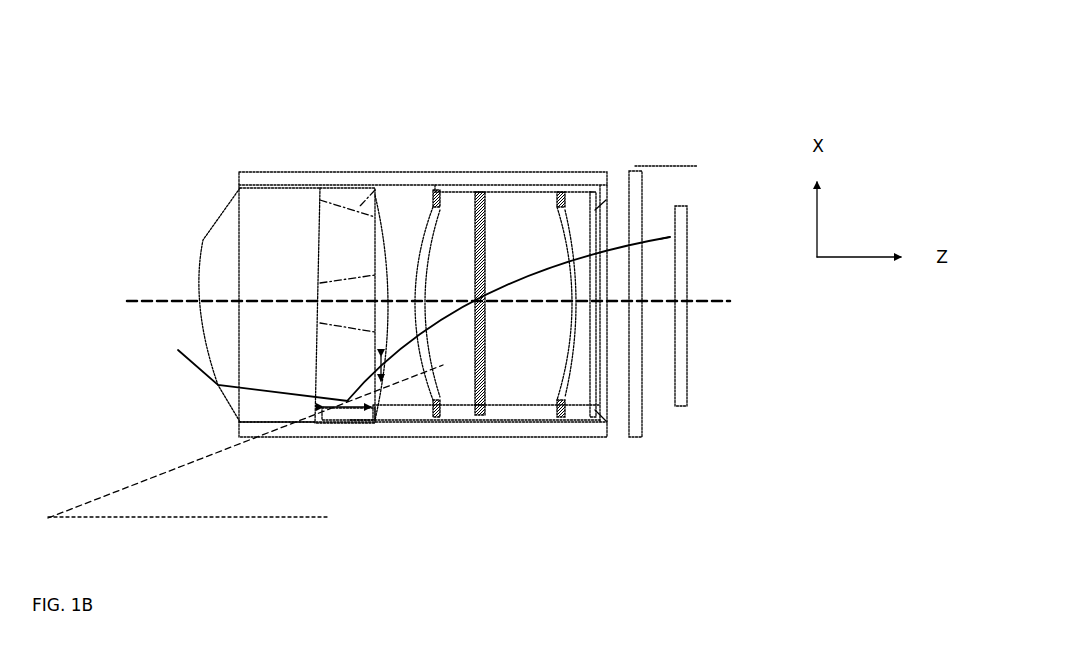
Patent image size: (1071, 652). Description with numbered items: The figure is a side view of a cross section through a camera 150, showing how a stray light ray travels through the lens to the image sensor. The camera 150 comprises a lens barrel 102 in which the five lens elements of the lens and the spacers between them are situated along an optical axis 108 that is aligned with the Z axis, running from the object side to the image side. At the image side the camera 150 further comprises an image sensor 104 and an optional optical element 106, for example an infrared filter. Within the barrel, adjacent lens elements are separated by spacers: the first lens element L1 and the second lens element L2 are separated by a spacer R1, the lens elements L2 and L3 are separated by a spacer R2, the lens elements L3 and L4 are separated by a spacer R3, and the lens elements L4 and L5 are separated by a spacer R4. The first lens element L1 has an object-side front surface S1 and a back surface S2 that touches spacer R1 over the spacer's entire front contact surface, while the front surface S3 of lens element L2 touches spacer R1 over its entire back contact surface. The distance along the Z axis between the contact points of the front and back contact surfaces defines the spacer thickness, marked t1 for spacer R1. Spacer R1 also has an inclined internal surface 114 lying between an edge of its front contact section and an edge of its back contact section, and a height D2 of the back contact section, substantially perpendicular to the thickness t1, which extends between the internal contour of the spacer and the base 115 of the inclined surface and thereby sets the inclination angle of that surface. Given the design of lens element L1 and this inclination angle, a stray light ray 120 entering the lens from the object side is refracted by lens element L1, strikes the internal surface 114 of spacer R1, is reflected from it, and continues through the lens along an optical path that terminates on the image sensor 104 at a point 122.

The camera 150 is at (498, 66).
The lens barrel 102 is at (537, 195).
The image sensor 104 is at (688, 233).
The optical element 106 is at (630, 192).
The optical axis 108 is at (157, 303).
The internal surface 114 is at (350, 433).
The base 115 is at (342, 380).
The stray light ray 120 is at (187, 365).
The point 122 is at (672, 237).
The front surface of lens element L1 S1 is at (212, 220).
The back surface of lens element L1 S2 is at (313, 213).
The front surface of lens element L2 S3 is at (380, 240).
The first lens element L1 is at (287, 197).
The second lens element L2 is at (417, 205).
The third lens element L3 is at (462, 205).
The fourth lens element L4 is at (510, 205).
The fifth lens element L5 is at (582, 207).
The spacer R1 is at (355, 202).
The spacer R2 is at (435, 398).
The spacer R3 is at (480, 398).
The spacer R4 is at (560, 403).
The height D2 is at (387, 365).
The spacer thickness t1 is at (328, 409).